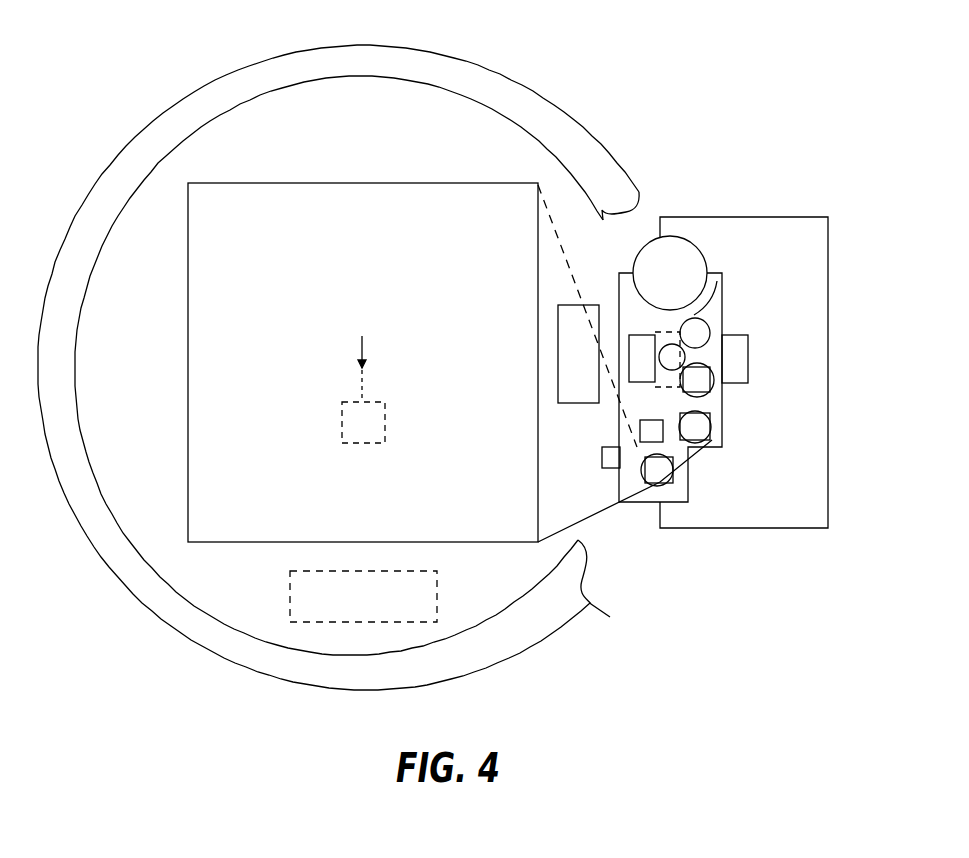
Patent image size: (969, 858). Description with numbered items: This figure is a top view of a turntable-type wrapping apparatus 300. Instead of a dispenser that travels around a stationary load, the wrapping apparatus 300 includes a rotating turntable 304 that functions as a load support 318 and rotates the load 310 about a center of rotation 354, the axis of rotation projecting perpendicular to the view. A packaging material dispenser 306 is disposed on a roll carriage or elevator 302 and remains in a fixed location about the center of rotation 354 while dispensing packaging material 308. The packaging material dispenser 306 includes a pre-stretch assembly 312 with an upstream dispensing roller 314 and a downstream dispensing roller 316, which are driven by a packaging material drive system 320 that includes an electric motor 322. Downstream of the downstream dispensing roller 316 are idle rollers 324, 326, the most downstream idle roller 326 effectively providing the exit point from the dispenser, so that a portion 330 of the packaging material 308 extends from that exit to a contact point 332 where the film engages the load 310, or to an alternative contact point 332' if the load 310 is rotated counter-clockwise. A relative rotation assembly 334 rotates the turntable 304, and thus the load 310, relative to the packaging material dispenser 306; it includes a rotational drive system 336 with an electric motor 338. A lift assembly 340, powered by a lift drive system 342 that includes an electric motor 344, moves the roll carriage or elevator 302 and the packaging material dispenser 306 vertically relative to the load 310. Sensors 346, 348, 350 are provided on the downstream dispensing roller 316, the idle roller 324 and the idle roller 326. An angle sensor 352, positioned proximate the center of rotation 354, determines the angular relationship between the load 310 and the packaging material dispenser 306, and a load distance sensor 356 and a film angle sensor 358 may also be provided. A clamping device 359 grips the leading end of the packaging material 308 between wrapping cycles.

The turntable-type wrapping apparatus 300 is at (178, 84).
The roll carriage or elevator 302 is at (722, 302).
The rotating turntable 304 is at (355, 84).
The packaging material dispenser 306 is at (702, 310).
The packaging material 308 is at (640, 232).
The load 310 is at (363, 183).
The pre-stretch assembly 312 is at (710, 332).
The upstream dispensing roller 314 is at (685, 350).
The downstream dispensing roller 316 is at (715, 372).
The load support 318 is at (122, 493).
The packaging material drive system 320 is at (633, 318).
The electric motor 322 is at (641, 344).
The idle roller 324 is at (708, 428).
The idle roller 326 is at (672, 530).
The portion of packaging material 330 is at (618, 507).
The contact point 332 is at (596, 491).
The contact point 332' is at (557, 295).
The relative rotation assembly 334 is at (447, 590).
The rotational drive system 336 is at (286, 597).
The electric motor 338 is at (340, 604).
The lift assembly 340 is at (760, 364).
The lift drive system 342 is at (759, 376).
The electric motor 344 is at (748, 383).
The sensor 346 is at (735, 372).
The sensor 348 is at (652, 432).
The sensor 350 is at (675, 483).
The angle sensor 352 is at (362, 443).
The center of rotation 354 is at (362, 355).
The load distance sensor 356 is at (725, 448).
The film angle sensor 358 is at (603, 457).
The clamping device 359 is at (570, 356).